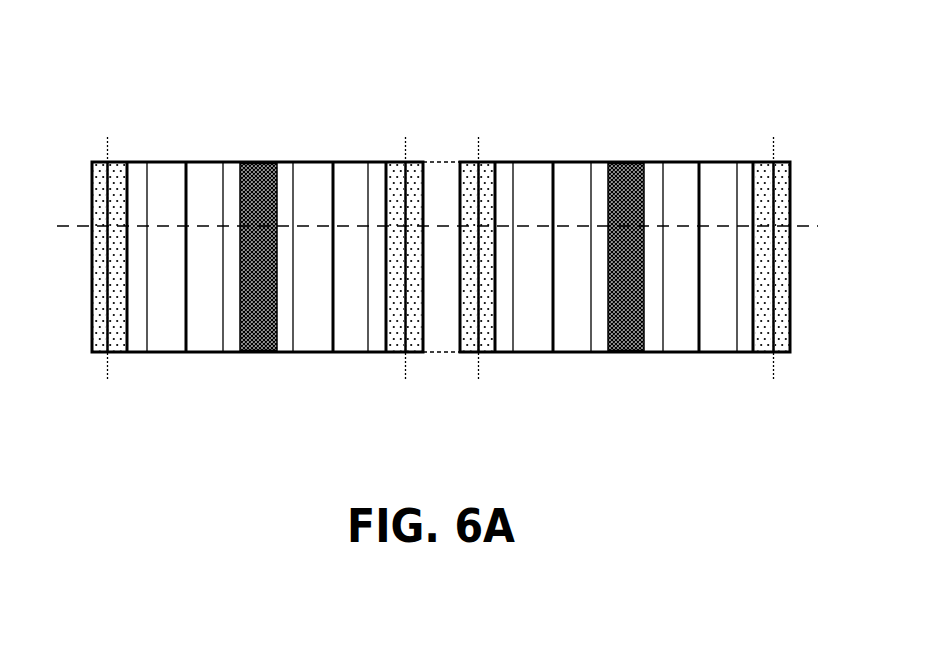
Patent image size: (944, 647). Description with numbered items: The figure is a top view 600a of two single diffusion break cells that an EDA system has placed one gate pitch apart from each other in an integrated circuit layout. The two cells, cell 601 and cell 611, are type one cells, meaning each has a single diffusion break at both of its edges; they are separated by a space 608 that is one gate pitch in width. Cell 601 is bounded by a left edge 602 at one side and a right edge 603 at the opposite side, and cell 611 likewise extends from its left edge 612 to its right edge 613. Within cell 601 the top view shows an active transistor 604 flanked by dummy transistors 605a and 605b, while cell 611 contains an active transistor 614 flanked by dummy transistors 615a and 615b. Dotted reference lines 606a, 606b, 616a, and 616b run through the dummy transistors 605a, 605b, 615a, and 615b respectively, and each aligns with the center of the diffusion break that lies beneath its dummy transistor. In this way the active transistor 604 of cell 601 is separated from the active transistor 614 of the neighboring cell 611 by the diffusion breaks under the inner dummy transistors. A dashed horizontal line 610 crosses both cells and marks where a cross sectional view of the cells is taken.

The top view 600a is at (465, 30).
The cell 601 is at (202, 162).
The left edge 602 is at (108, 330).
The right edge 603 is at (407, 330).
The active transistor 604 is at (266, 162).
The dummy transistor 605a is at (96, 202).
The dummy transistor 605b is at (398, 199).
The reference line 606a is at (108, 158).
The reference line 606b is at (410, 156).
The space 608 is at (440, 345).
The line 610 is at (803, 228).
The cell 611 is at (590, 160).
The left edge 612 is at (480, 332).
The right edge 613 is at (773, 330).
The active transistor 614 is at (641, 162).
The dummy transistor 615a is at (490, 179).
The dummy transistor 615b is at (760, 187).
The reference line 616a is at (478, 156).
The reference line 616b is at (774, 158).